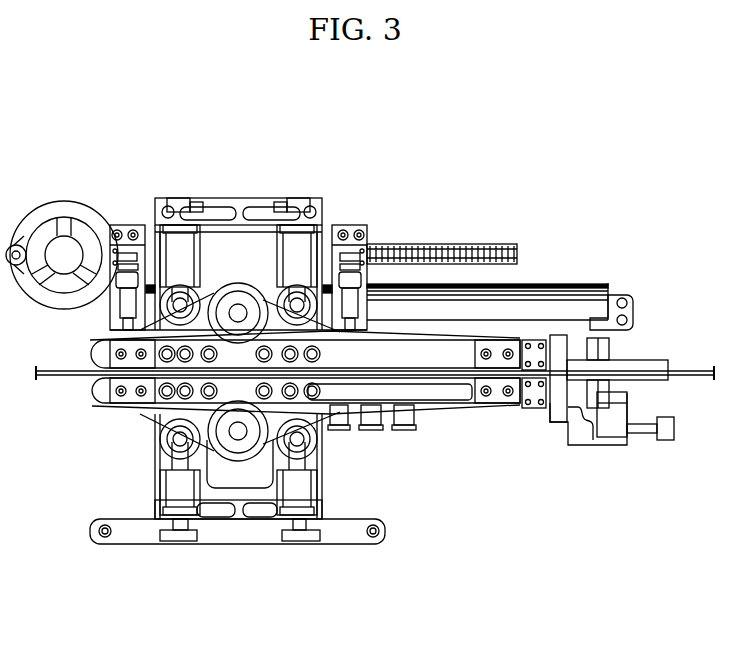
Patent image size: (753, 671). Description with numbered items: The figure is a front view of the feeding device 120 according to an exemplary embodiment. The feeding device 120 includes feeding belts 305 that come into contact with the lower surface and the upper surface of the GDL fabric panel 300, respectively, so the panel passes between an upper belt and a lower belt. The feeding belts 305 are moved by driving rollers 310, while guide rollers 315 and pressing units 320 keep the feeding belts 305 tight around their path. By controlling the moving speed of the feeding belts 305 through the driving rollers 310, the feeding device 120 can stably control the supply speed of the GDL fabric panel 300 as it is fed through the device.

The feeding device 120 is at (340, 394).
The GDL fabric panel 300 is at (60, 376).
The feeding belts 305 is at (449, 336).
The driving rollers 310 is at (237, 298).
The guide rollers 315 is at (311, 288).
The pressing units 320 is at (296, 240).